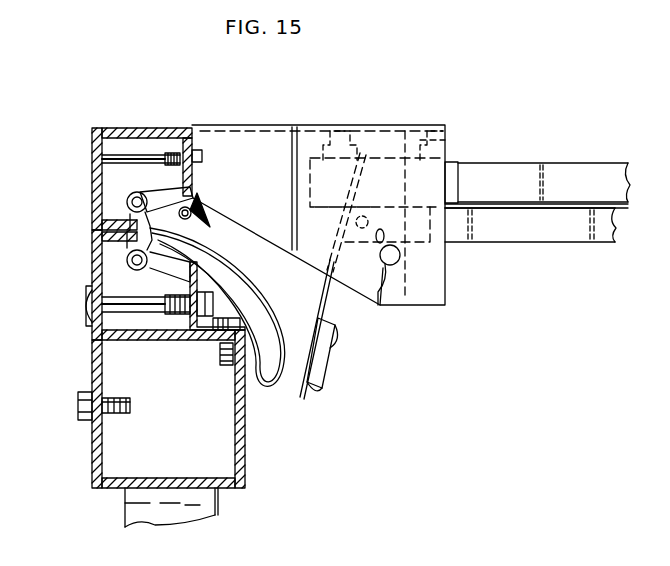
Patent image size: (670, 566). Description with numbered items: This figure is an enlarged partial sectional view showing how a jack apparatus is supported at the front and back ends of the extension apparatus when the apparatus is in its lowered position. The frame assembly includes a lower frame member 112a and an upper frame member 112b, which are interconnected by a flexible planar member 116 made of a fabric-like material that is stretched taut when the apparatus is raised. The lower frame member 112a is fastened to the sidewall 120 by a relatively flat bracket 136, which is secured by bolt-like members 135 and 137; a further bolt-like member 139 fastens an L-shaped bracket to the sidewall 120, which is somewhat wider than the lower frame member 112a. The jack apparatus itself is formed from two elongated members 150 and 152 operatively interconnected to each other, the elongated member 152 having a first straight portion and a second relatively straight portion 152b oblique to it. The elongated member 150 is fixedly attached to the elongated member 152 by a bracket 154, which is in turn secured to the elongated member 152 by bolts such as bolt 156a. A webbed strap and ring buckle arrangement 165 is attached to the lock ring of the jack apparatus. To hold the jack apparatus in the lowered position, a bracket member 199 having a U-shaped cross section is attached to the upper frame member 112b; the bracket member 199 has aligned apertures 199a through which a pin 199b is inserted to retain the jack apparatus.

The lower frame member 112a is at (92, 258).
The upper frame member 112b is at (90, 190).
The flexible planar member 116 is at (247, 296).
The sidewall 120 is at (138, 428).
The bolt-like member 135 is at (121, 414).
The bracket 136 is at (88, 432).
The bolt-like member 137 is at (84, 305).
The bolt-like member 139 is at (221, 366).
The elongated member 150 is at (584, 244).
The elongated member 152 is at (592, 162).
The second relatively straight portion 152b is at (228, 218).
The bracket 154 is at (459, 164).
The bolt 156a is at (447, 131).
The ring buckle arrangement 165 is at (330, 355).
The bracket member 199 is at (390, 125).
The aligned apertures 199a is at (380, 305).
The pin 199b is at (398, 257).